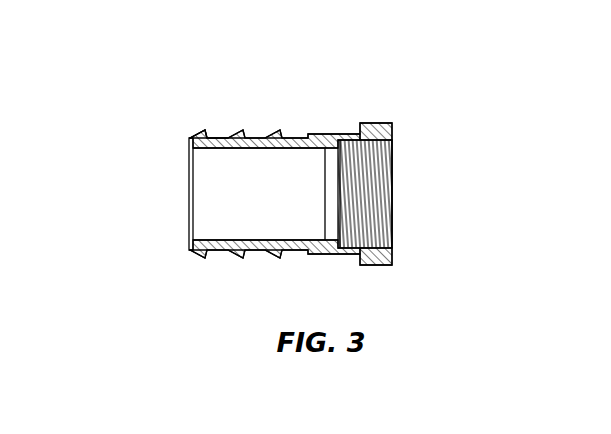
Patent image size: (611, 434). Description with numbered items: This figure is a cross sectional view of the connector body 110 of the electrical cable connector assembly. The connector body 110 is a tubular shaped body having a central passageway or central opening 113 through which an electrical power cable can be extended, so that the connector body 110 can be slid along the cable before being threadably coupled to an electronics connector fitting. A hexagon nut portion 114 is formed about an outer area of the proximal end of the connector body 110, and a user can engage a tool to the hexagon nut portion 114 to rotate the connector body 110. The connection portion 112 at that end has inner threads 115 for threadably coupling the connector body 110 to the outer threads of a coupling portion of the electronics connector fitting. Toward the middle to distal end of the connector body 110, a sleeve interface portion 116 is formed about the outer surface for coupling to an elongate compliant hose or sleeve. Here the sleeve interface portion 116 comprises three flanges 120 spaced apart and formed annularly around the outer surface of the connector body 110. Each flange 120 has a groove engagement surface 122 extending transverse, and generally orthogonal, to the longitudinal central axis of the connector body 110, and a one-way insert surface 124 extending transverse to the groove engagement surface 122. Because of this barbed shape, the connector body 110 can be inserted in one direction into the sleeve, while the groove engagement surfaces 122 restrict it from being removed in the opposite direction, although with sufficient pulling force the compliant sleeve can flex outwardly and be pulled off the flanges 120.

The connector body 110 is at (115, 55).
The connection portion 112 is at (393, 188).
The central opening 113 is at (395, 162).
The hexagon nut portion 114 is at (380, 127).
The inner threads 115 is at (393, 235).
The sleeve interface portion 116 is at (260, 130).
The flanges 120 is at (188, 143).
The groove engagement surface 122 is at (228, 132).
The one-way insert surface 124 is at (203, 132).